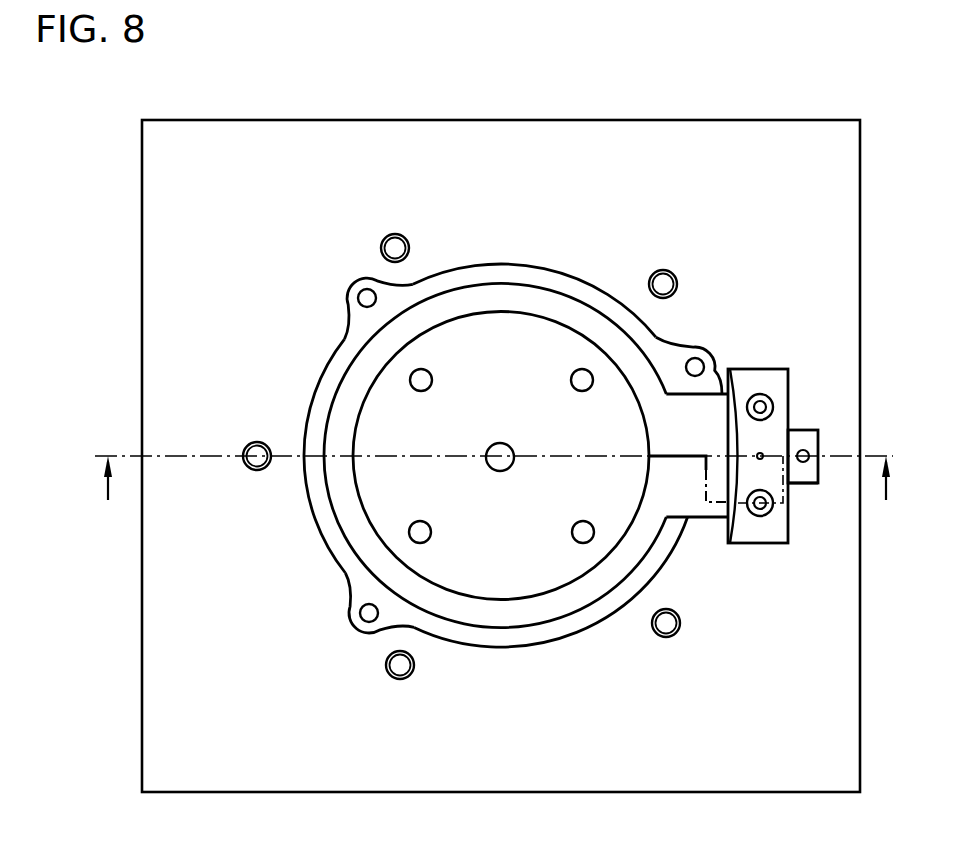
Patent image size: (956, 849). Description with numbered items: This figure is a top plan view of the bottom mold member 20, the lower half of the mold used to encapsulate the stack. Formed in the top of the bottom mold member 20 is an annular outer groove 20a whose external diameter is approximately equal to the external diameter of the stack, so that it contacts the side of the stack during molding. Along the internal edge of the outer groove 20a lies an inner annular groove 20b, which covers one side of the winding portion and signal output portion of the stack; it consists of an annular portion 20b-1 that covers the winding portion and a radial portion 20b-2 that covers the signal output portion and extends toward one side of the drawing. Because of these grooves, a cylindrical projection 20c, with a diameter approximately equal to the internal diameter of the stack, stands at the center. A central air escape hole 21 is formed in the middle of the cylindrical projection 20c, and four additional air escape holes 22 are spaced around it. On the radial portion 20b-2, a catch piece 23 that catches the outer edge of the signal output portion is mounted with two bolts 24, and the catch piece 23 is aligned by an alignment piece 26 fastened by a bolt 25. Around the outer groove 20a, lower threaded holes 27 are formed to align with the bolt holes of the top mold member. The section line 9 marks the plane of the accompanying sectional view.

The section line 9- 9 is at (500, 495).
The bottom mold member 20 is at (763, 111).
The annular outer groove 20a is at (553, 637).
The inner annular groove 20b is at (356, 551).
The annular portion 20b-1 is at (632, 557).
The radial portion 20b-2 is at (716, 402).
The cylindrical projection 20c is at (492, 588).
The central air escape hole 21 is at (505, 448).
The additional air escape holes 22 is at (427, 376).
The catch piece 23 is at (744, 437).
The bolts 24 is at (766, 400).
The bolt 25 is at (806, 452).
The alignment piece 26 is at (810, 484).
The lower threaded holes 27 is at (393, 245).